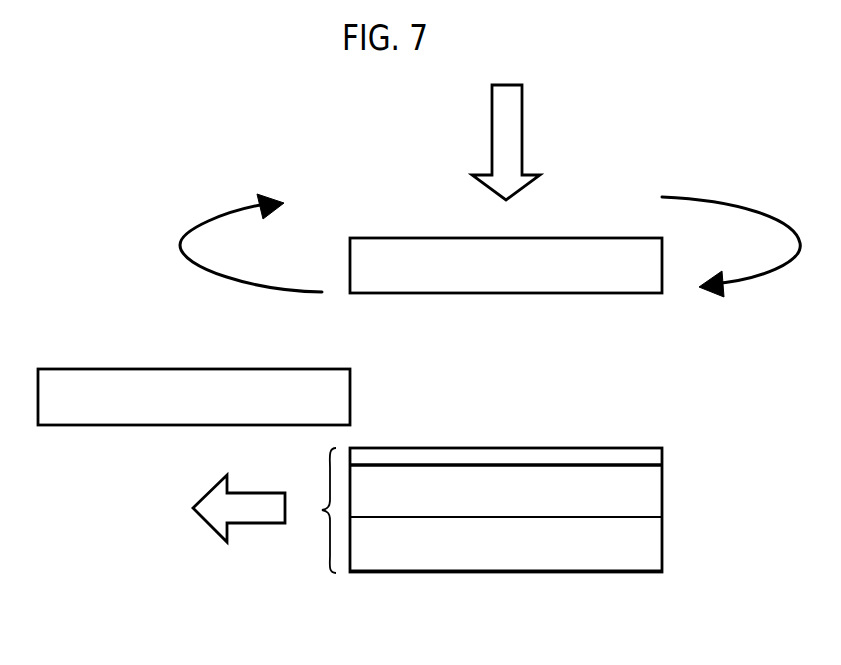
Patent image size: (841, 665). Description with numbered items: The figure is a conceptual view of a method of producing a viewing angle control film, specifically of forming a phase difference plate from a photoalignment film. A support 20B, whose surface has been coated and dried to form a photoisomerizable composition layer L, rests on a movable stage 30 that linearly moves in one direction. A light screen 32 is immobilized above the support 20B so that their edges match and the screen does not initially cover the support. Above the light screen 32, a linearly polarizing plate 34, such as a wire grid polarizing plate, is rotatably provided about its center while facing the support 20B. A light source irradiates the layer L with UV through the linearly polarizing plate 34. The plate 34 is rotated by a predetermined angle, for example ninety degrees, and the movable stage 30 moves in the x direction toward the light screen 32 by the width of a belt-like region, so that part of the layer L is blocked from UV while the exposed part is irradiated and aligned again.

The linearly polarizing plate 34 is at (408, 261).
The light screen 32 is at (127, 398).
The support 20B is at (645, 488).
The movable stage 30 is at (603, 552).
The photoisomerizable composition layer L is at (558, 457).
The ultraviolet light UV is at (512, 127).
The x direction x is at (258, 515).